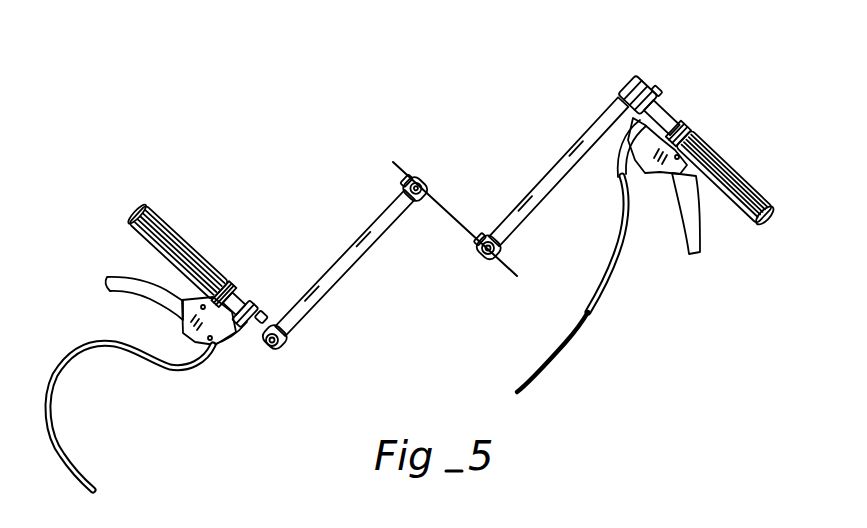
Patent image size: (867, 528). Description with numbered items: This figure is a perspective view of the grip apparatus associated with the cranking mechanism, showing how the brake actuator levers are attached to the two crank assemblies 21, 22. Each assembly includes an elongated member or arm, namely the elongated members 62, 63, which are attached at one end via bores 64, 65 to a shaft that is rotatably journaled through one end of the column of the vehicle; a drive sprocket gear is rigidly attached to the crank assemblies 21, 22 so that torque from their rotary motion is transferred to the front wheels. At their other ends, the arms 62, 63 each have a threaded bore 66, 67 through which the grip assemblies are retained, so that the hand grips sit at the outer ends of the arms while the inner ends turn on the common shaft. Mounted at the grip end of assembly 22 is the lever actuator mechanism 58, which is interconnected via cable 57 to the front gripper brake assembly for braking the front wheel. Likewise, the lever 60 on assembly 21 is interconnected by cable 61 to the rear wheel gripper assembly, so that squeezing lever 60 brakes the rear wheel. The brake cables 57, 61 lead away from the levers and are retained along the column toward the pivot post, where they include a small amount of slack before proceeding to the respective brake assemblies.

The crank assembly 21 is at (222, 236).
The grip assembly 22 is at (773, 90).
The cable 57 is at (573, 343).
The lever actuator mechanism 58 is at (690, 240).
The lever 60 is at (107, 283).
The cable 61 is at (67, 452).
The elongated member 62 is at (574, 153).
The elongated member 63 is at (348, 248).
The bore 64 is at (478, 270).
The bore 65 is at (437, 178).
The threaded bore 66 is at (631, 82).
The threaded bore 67 is at (283, 347).